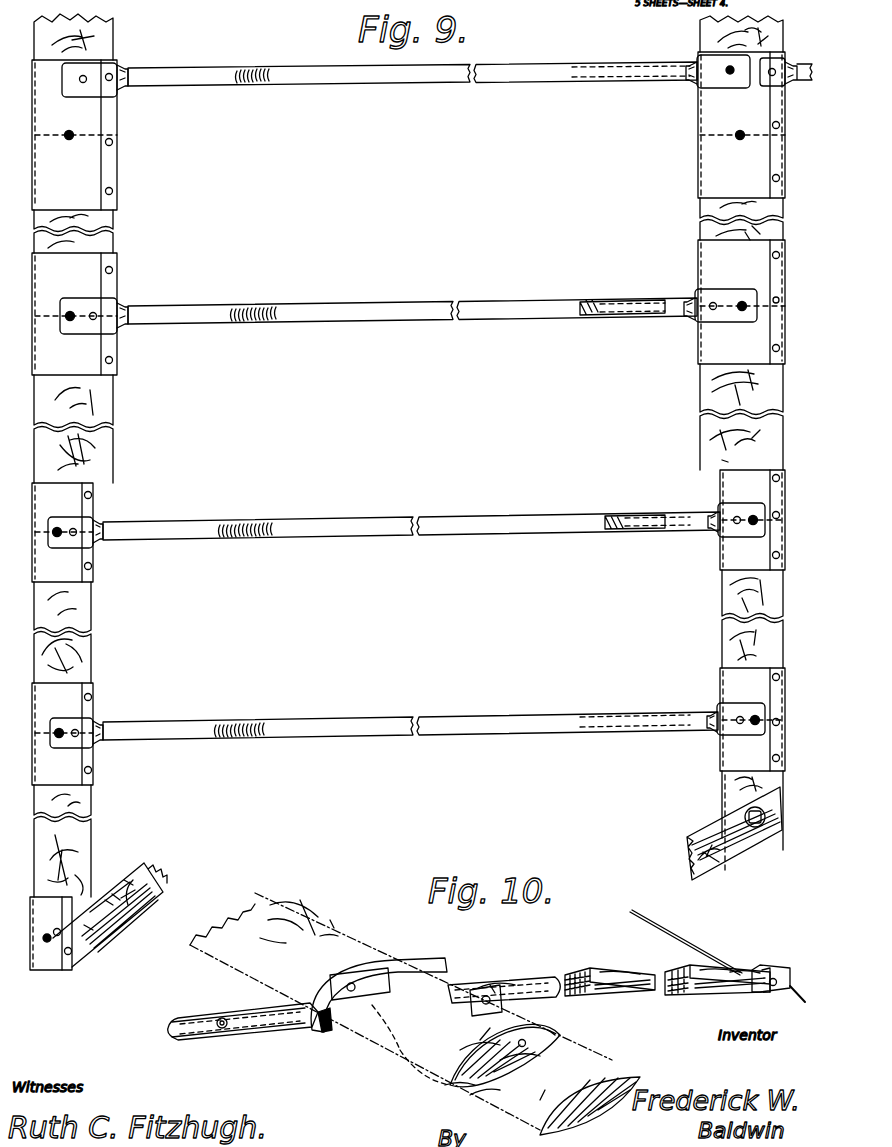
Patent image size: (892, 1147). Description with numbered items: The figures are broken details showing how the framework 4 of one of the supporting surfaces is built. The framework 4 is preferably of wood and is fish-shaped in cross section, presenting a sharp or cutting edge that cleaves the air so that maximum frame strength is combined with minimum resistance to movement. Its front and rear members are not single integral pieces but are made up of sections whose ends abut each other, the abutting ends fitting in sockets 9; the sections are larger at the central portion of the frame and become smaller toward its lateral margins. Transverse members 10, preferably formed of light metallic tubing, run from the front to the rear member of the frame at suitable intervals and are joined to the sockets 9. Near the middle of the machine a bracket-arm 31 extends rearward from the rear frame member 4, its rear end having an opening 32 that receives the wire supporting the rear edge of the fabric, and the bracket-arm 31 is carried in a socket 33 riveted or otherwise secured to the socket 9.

In FIG. 9, the framework 4 is at (83, 647).
In FIG. 10, the framework 4 is at (612, 1073).
In FIG. 9, the socket 9 is at (98, 132).
In FIG. 10, the socket 9 is at (398, 1050).
In FIG. 9, the transverse member 10 is at (422, 78).
In FIG. 10, the transverse member 10 is at (232, 1012).
In FIG. 10, the bracket-arm 31 is at (612, 975).
In FIG. 10, the opening 32 is at (778, 976).
In FIG. 10, the socket 33 is at (527, 976).